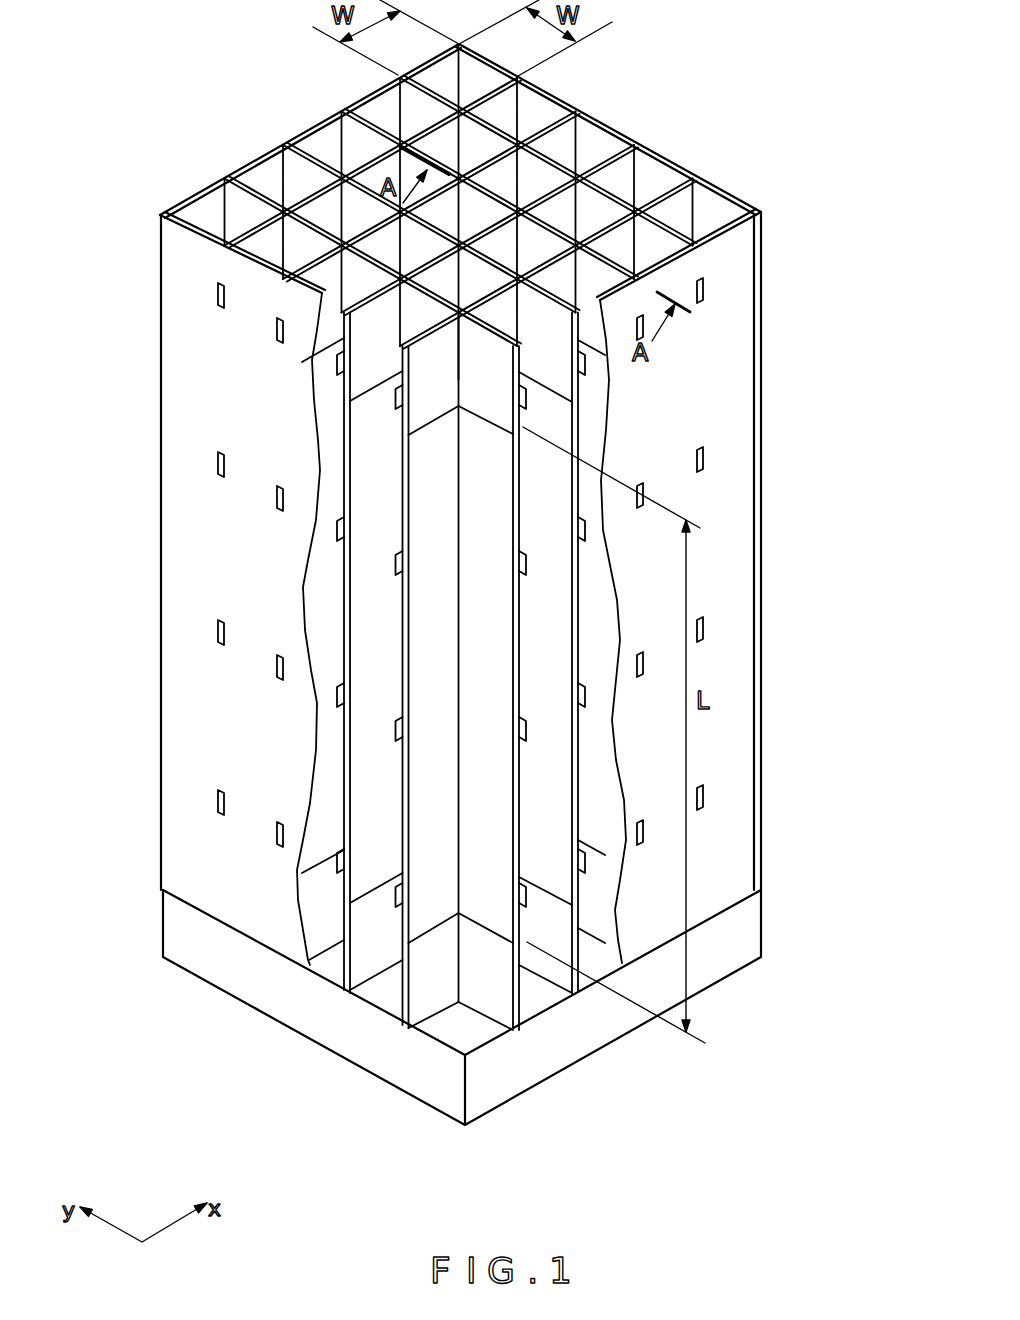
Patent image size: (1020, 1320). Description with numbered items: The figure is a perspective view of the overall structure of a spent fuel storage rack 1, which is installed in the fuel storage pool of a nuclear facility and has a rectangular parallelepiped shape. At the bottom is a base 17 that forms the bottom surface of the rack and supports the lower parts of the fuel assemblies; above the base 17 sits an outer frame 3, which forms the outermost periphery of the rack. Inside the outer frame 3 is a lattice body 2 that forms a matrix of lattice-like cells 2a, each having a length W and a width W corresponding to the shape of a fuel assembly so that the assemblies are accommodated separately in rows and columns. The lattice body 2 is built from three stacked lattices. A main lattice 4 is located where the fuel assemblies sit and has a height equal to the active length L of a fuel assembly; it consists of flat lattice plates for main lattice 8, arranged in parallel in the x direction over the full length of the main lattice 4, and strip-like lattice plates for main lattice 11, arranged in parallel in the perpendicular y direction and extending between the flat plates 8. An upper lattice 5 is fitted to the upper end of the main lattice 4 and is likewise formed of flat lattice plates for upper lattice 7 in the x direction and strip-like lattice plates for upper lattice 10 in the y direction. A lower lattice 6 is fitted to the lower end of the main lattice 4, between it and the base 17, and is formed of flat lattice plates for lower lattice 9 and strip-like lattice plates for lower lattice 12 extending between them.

The spent fuel storage rack 1 is at (763, 127).
The lattice body 2 is at (557, 167).
The lattice-like cells 2a is at (653, 182).
The outer frame 3 is at (728, 291).
The main lattice 4 is at (435, 637).
The upper lattice 5 is at (422, 415).
The lower lattice 6 is at (447, 983).
The flat lattice plates for upper lattice 7 is at (380, 327).
The flat lattice plates for main lattice 8 is at (440, 822).
The flat lattice plates for lower lattice 9 is at (443, 1000).
The strip-like lattice plates for upper lattice 10 is at (493, 413).
The strip-like lattice plates for main lattice 11 is at (493, 630).
The strip-like lattice plates for lower lattice 12 is at (500, 997).
The base 17 is at (708, 952).